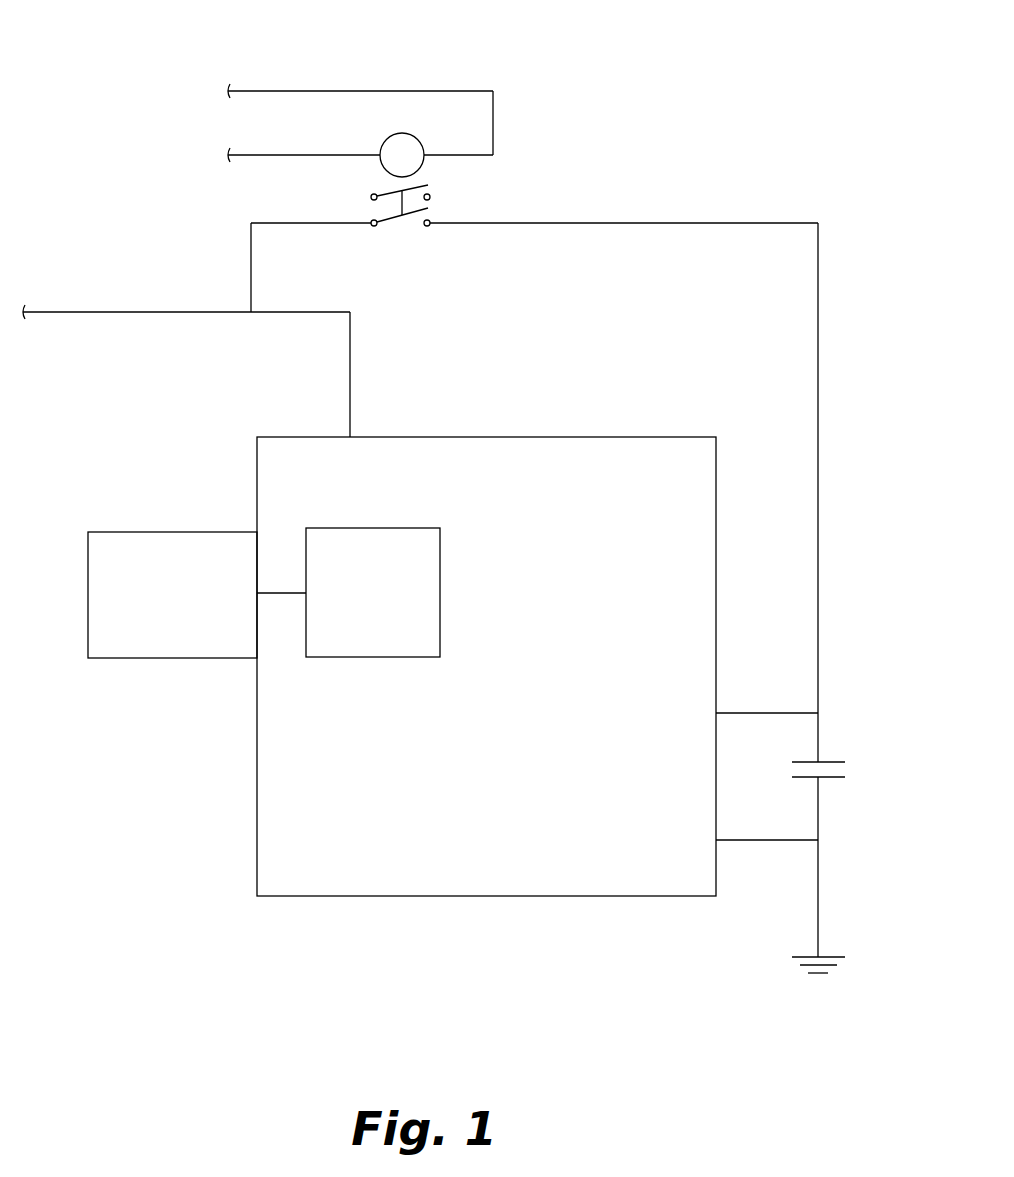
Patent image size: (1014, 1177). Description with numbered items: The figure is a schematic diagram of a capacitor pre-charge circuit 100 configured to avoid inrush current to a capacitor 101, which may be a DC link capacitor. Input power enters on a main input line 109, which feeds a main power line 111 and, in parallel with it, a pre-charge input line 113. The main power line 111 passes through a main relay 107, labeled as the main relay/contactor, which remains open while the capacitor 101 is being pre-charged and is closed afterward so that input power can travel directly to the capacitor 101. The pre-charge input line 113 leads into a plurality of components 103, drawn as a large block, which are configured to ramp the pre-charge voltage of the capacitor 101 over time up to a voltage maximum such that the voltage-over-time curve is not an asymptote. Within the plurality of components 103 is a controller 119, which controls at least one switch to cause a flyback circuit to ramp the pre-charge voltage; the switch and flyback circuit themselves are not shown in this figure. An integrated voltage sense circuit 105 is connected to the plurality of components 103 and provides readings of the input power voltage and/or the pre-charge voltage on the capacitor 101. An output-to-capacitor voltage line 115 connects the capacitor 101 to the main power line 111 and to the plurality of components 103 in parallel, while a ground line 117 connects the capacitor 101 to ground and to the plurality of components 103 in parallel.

The capacitor pre-charge circuit 100 is at (112, 30).
The capacitor 101 is at (832, 760).
The plurality of components 103 is at (463, 679).
The voltage sense circuit 105 is at (151, 607).
The main relay 107 is at (429, 222).
The main input line 109 is at (110, 315).
The main power line 111 is at (250, 258).
The pre-charge input line 113 is at (350, 395).
The output-to-capacitor voltage line 115 is at (820, 733).
The ground line 117 is at (818, 930).
The controller 119 is at (351, 604).